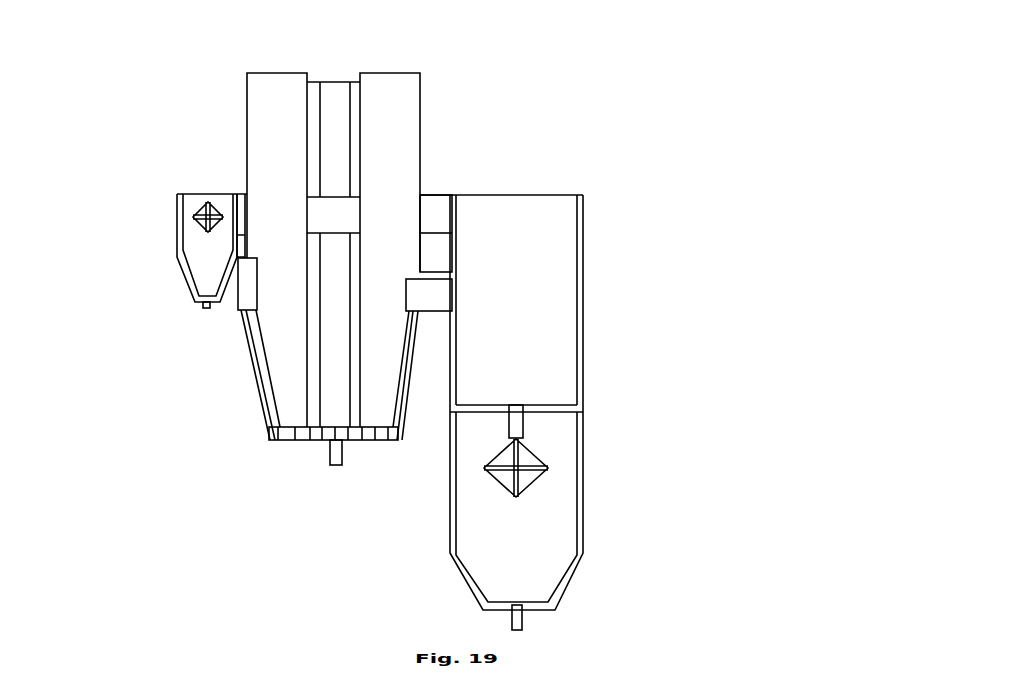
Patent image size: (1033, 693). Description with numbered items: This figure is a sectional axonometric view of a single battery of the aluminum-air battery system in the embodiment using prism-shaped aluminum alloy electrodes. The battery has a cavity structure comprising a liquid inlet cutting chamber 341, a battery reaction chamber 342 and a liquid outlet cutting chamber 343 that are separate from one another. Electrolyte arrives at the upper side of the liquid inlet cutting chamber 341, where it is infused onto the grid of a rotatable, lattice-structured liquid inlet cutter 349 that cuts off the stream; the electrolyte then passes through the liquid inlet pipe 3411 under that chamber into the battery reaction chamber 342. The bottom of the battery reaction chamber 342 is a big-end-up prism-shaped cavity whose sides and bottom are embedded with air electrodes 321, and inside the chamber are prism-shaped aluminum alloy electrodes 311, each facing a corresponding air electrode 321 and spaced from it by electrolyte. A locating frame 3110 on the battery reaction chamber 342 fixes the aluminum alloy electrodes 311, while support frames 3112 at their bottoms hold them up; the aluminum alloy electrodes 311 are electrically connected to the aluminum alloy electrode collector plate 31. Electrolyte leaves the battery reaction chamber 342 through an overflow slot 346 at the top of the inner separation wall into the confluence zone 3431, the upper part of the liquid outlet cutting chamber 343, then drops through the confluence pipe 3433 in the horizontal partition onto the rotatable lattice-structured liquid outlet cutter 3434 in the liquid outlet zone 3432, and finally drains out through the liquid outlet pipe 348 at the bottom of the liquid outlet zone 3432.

The aluminum alloy electrode collector plate 31 is at (333, 212).
The aluminum alloy electrode 311 is at (388, 131).
The locating frame 3110 is at (442, 255).
The support frame 3112 is at (380, 433).
The air electrode 321 is at (253, 363).
The liquid inlet cutting chamber 341 is at (178, 247).
The liquid inlet pipe 3411 is at (197, 305).
The battery reaction chamber 342 is at (315, 361).
The liquid outlet cutting chamber 343 is at (733, 523).
The confluence zone 3431 is at (520, 360).
The liquid outlet zone 3432 is at (530, 555).
The confluence pipe 3433 is at (520, 428).
The liquid outlet cutter 3434 is at (527, 480).
The overflow slot 346 is at (437, 289).
The liquid outlet pipe 348 is at (518, 620).
The liquid inlet cutter 349 is at (197, 210).